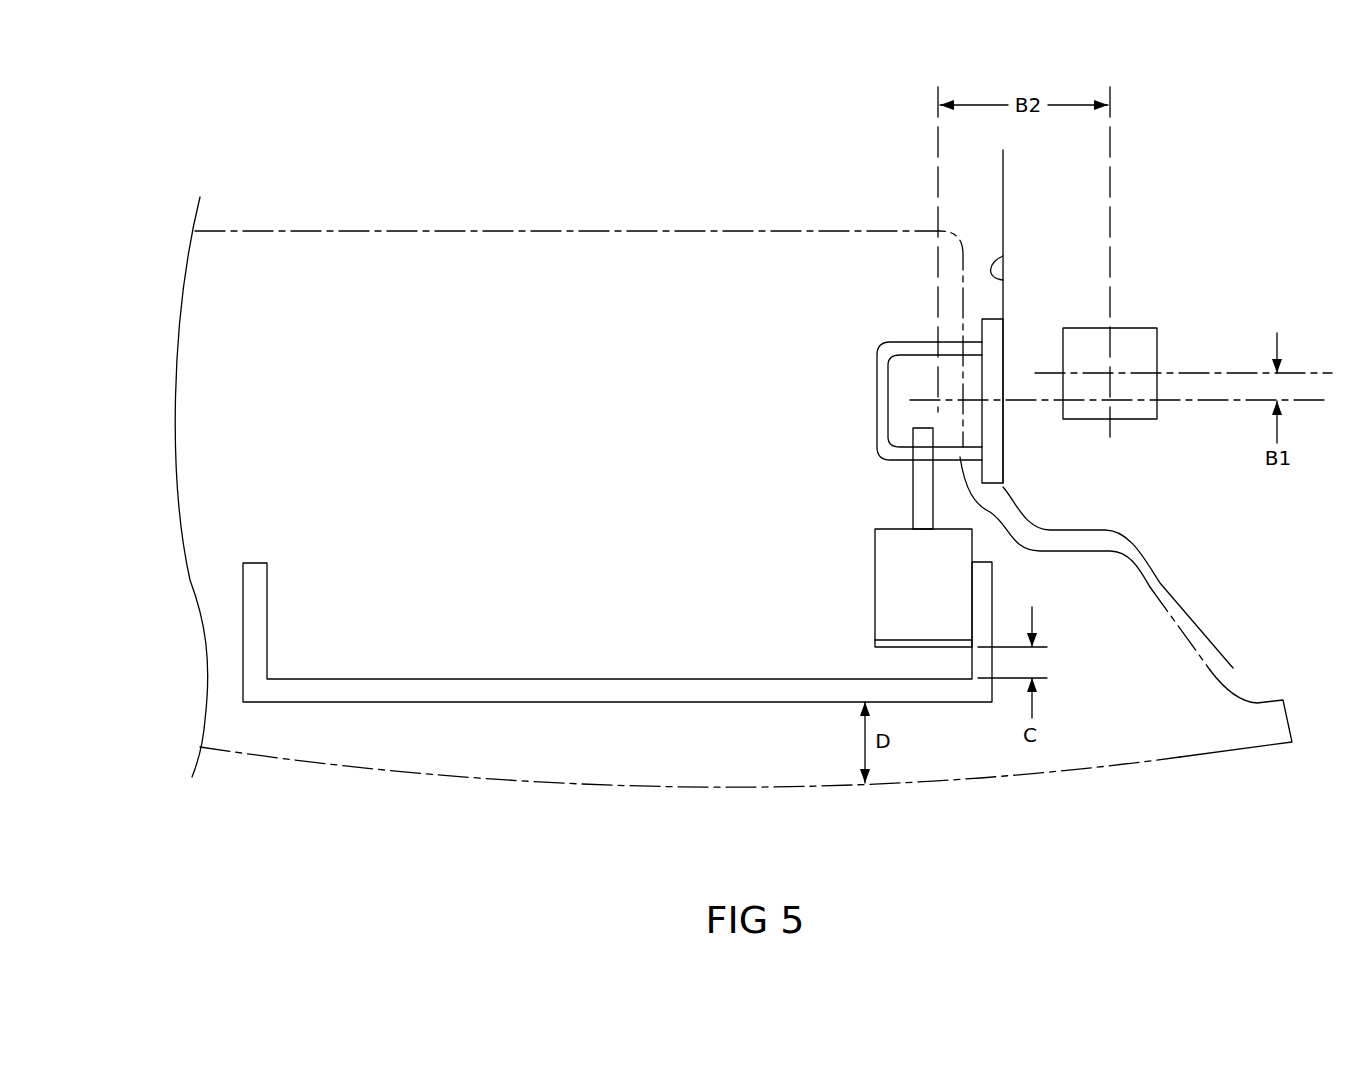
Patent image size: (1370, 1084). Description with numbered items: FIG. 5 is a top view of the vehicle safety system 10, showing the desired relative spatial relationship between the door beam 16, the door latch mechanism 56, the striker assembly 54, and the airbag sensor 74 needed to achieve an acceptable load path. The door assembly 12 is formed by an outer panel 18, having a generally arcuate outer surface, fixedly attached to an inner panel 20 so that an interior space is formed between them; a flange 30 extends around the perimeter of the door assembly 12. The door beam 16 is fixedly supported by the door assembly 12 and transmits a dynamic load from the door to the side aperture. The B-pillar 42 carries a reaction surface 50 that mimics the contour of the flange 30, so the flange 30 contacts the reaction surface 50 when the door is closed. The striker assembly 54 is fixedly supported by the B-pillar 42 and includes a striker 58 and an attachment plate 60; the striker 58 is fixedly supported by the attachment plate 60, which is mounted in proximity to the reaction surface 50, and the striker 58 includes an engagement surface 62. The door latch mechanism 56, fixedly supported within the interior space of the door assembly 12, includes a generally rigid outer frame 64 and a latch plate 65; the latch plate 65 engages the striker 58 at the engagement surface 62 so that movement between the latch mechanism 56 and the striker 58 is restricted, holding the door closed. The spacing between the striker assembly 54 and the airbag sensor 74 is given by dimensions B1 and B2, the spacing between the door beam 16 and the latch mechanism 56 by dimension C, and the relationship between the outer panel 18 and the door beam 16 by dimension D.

The vehicle safety system 10 is at (562, 142).
The door assembly 12 is at (290, 204).
The door beam 16 is at (772, 712).
The outer panel 18 is at (550, 782).
The inner panel 20 is at (522, 228).
The flange 30 is at (1263, 697).
The B-pillar 42 is at (1003, 227).
The reaction surface 50 is at (1003, 280).
The striker assembly 54 is at (968, 322).
The door latch mechanism 56 is at (866, 576).
The striker 58 is at (882, 375).
The attachment plate 60 is at (993, 317).
The engagement surface 62 is at (949, 455).
The outer frame 64 is at (880, 638).
The latch plate 65 is at (913, 432).
The airbag sensor 74 is at (1150, 355).